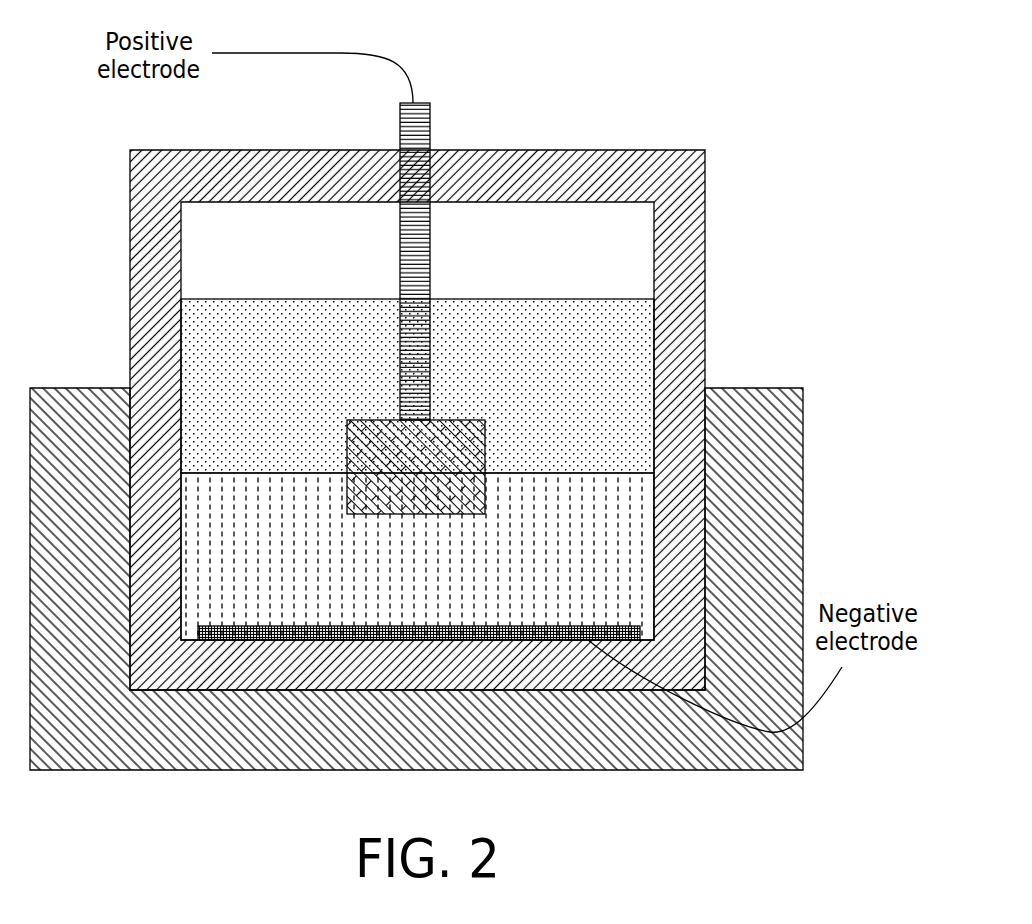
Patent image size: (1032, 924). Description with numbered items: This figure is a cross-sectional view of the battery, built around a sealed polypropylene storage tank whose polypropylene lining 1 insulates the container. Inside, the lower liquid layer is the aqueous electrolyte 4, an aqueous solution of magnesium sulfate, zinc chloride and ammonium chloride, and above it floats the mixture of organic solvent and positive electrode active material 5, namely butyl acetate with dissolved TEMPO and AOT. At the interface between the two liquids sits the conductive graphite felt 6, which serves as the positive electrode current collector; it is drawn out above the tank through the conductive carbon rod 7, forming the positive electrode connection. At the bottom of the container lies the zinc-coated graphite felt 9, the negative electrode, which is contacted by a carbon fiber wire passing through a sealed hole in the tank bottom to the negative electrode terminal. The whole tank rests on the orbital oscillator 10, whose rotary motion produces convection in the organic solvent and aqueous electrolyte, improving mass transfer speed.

The polypropylene lining 1 is at (417, 420).
The aqueous electrolyte 4 is at (417, 556).
The mixture of organic solvent and positive electrode active material 5 is at (417, 386).
The graphite felt 6 is at (416, 467).
The carbon rod 7 is at (413, 298).
The zinc-coated graphite felt 9 is at (608, 634).
The orbital oscillator 10 is at (416, 579).